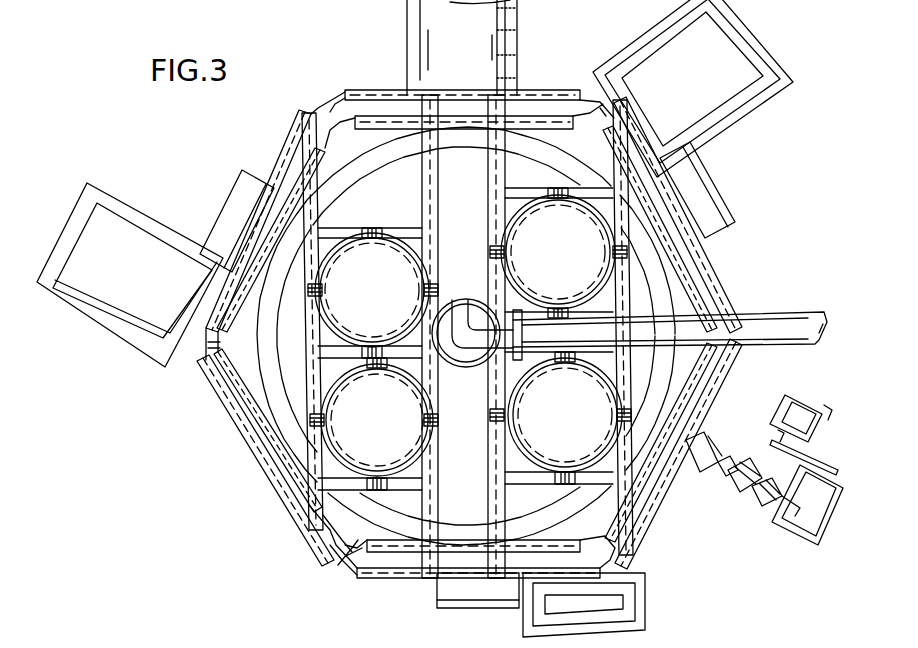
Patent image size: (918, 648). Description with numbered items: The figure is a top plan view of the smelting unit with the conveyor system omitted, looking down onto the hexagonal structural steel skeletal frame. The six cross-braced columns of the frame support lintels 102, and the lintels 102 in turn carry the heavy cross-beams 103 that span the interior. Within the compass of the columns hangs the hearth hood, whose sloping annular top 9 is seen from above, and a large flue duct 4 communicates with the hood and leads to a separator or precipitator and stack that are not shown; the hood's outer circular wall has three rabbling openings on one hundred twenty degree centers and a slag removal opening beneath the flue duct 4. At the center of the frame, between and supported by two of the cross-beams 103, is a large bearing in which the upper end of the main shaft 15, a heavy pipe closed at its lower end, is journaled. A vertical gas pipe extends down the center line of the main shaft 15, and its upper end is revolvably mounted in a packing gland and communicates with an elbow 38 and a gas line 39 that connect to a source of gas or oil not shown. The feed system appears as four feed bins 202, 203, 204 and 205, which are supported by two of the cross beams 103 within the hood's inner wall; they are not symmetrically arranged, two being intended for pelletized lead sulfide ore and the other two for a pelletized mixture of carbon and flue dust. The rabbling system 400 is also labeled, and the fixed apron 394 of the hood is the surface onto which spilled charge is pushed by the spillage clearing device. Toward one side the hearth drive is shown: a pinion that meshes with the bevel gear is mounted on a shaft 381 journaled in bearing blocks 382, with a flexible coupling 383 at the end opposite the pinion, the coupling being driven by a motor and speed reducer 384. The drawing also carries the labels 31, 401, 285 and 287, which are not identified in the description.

The flue duct 4 is at (518, 38).
The sloping annular top 9 is at (369, 174).
The cross-beams 103 is at (340, 192).
The feed bin 202 is at (380, 280).
The feed bin 203 is at (568, 243).
The feed bin 204 is at (572, 397).
The feed bin 205 is at (384, 410).
The elbow 38 is at (470, 332).
The gas line 39 is at (490, 334).
The main shaft 15 is at (482, 360).
The outlet pipe 31 is at (781, 312).
The fixed apron 394 is at (255, 170).
The rabbling system 400 is at (128, 204).
The panel 401 is at (140, 316).
The lintels 102 is at (253, 447).
The shaft 381 is at (714, 462).
The bearing blocks 382 is at (728, 492).
The flexible coupling 383 is at (760, 504).
The motor and speed reducer 384 is at (790, 535).
The component 285 is at (808, 636).
The component 287 is at (824, 647).